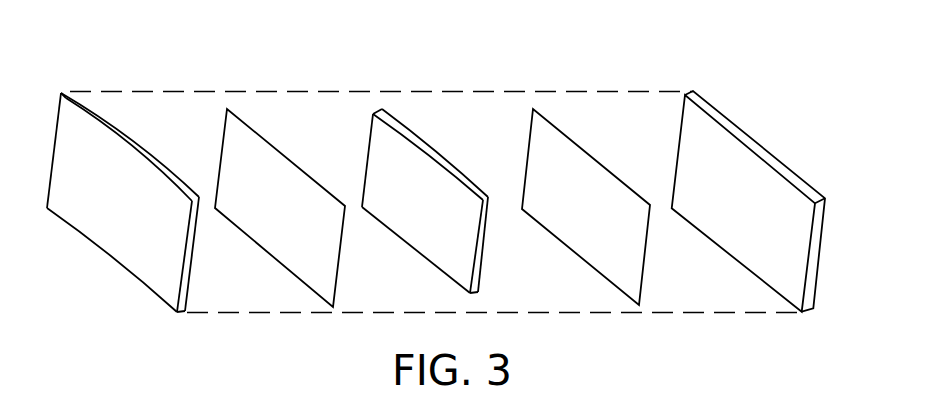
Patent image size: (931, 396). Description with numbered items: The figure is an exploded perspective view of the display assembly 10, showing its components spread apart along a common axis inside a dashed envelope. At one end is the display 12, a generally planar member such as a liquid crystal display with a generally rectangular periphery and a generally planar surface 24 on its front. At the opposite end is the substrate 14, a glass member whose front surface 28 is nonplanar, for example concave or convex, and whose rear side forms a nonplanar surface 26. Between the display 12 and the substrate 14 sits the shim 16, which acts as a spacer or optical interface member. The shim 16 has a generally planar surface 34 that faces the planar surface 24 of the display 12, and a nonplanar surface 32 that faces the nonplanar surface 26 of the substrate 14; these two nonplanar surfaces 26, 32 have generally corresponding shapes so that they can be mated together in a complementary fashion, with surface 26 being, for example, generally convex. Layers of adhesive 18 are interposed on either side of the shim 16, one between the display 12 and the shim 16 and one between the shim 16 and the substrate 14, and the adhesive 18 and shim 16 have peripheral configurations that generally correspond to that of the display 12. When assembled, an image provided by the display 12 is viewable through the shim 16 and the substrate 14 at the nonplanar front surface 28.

The display assembly 10 is at (403, 48).
The display 12 is at (748, 201).
The substrate 14 is at (139, 202).
The shim 16 is at (442, 207).
The adhesive 18 is at (248, 157).
The planar surface 24 is at (734, 212).
The nonplanar surface 26 is at (196, 256).
The front surface 28 is at (139, 202).
The nonplanar surface 32 is at (442, 207).
The planar surface 34 is at (487, 256).